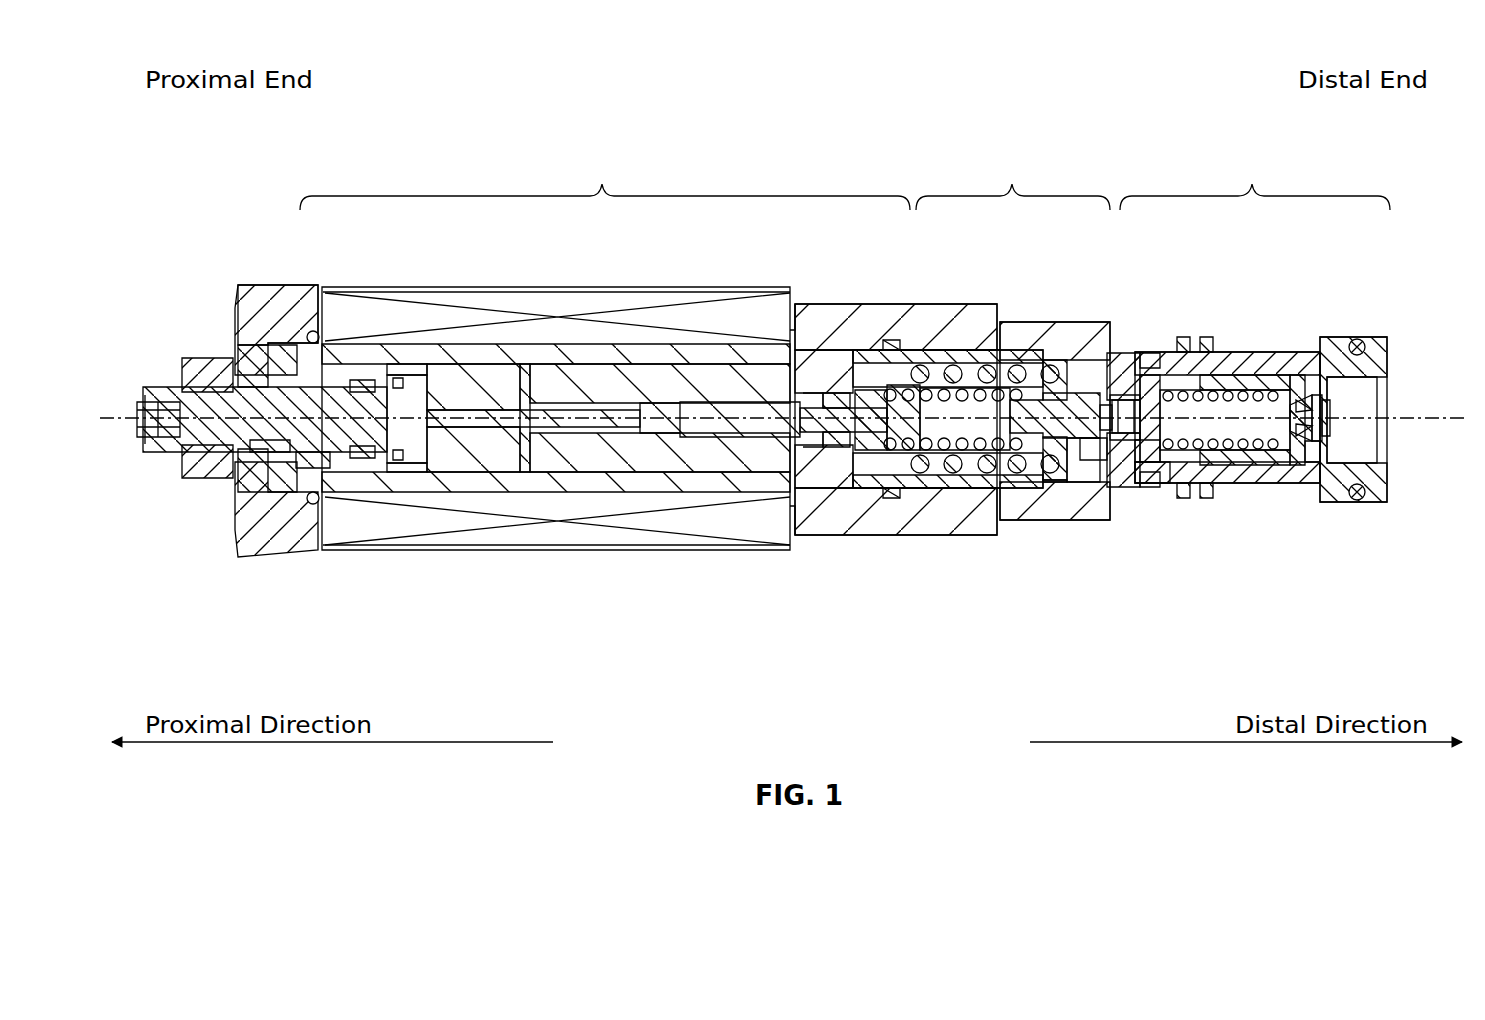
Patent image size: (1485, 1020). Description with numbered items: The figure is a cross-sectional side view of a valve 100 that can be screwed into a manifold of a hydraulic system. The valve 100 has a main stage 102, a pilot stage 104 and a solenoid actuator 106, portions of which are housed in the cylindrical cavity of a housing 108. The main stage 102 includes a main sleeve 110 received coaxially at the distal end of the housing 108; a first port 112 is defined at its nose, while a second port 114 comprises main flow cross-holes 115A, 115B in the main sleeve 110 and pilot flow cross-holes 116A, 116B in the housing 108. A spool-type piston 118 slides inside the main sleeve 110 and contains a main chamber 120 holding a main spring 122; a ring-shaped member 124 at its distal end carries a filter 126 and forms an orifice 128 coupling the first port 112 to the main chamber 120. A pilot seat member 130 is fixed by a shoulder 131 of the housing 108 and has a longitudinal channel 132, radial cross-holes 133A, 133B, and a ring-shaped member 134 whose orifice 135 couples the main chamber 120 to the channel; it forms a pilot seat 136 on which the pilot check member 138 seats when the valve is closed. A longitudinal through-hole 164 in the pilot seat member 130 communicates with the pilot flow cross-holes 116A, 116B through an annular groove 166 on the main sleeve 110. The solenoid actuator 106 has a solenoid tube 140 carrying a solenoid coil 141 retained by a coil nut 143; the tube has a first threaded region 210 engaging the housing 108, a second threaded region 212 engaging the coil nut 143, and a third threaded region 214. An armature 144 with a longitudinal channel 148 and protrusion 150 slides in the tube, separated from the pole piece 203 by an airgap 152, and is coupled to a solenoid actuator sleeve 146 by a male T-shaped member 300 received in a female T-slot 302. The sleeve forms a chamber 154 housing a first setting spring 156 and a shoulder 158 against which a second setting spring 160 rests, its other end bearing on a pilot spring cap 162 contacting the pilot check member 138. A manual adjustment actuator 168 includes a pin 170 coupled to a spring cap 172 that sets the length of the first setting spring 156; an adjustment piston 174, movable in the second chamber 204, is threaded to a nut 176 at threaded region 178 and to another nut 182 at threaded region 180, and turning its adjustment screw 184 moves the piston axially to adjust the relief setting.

The valve 100 is at (162, 224).
The main stage 102 is at (1252, 186).
The pilot stage 104 is at (1012, 186).
The solenoid actuator 106 is at (602, 186).
The housing 108 is at (848, 308).
The main sleeve 110 is at (1236, 356).
The first port 112 is at (1392, 418).
The second port 114 is at (1256, 330).
The main flow cross-hole 115A is at (1320, 410).
The main flow cross-hole 115B is at (1320, 430).
The pilot flow cross-hole 116A is at (1185, 336).
The pilot flow cross-hole 116B is at (1185, 500).
The piston 118 is at (1278, 466).
The main chamber 120 is at (1250, 435).
The main spring 122 is at (1215, 466).
The ring-shaped member 124 is at (1312, 380).
The filter 126 is at (1336, 420).
The orifice 128 is at (1300, 465).
The pilot seat member 130 is at (1122, 488).
The shoulder 131 is at (1110, 393).
The longitudinal channel 132 is at (1122, 415).
The radial cross-hole 133A is at (1098, 356).
The radial cross-hole 133B is at (1068, 512).
The ring-shaped member 134 is at (1148, 355).
The orifice 135 is at (1150, 487).
The pilot seat 136 is at (1098, 446).
The pilot check member 138 is at (1062, 482).
The solenoid tube 140 is at (578, 344).
The solenoid coil 141 is at (430, 290).
The coil nut 143 is at (292, 302).
The armature 144 is at (718, 380).
The solenoid actuator sleeve 146 is at (937, 462).
The longitudinal channel 148 is at (720, 438).
The protrusion 150 is at (664, 402).
The airgap 152 is at (523, 472).
The chamber 154 is at (970, 432).
The first setting spring 156 is at (903, 456).
The shoulder 158 is at (930, 370).
The second setting spring 160 is at (985, 376).
The pilot spring cap 162 is at (1040, 368).
The longitudinal through-hole 164 is at (1117, 407).
The annular groove 166 is at (1158, 466).
The manual adjustment actuator 168 is at (224, 344).
The pin 170 is at (653, 430).
The spring cap 172 is at (866, 453).
The adjustment piston 174 is at (358, 378).
The nut 176 is at (330, 382).
The threaded region 178 is at (275, 452).
The threaded region 180 is at (200, 392).
The nut 182 is at (220, 468).
The adjustment screw 184 is at (136, 414).
The pole piece 203 is at (457, 470).
The second chamber 204 is at (400, 460).
The first threaded region 210 is at (830, 344).
The second threaded region 212 is at (284, 342).
The third threaded region 214 is at (313, 468).
The male T-shaped member 300 is at (834, 447).
The female T-slot 302 is at (812, 447).